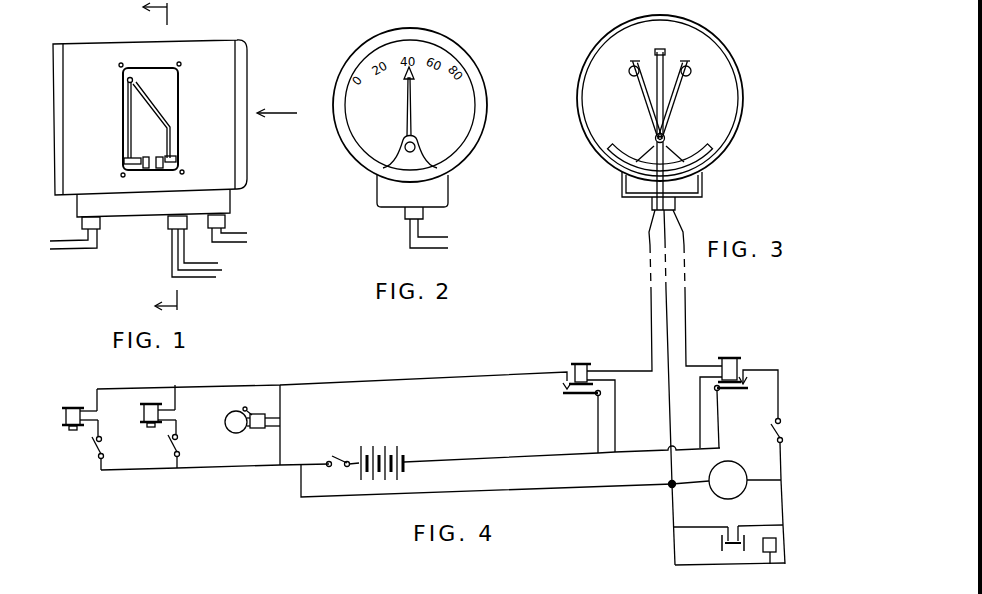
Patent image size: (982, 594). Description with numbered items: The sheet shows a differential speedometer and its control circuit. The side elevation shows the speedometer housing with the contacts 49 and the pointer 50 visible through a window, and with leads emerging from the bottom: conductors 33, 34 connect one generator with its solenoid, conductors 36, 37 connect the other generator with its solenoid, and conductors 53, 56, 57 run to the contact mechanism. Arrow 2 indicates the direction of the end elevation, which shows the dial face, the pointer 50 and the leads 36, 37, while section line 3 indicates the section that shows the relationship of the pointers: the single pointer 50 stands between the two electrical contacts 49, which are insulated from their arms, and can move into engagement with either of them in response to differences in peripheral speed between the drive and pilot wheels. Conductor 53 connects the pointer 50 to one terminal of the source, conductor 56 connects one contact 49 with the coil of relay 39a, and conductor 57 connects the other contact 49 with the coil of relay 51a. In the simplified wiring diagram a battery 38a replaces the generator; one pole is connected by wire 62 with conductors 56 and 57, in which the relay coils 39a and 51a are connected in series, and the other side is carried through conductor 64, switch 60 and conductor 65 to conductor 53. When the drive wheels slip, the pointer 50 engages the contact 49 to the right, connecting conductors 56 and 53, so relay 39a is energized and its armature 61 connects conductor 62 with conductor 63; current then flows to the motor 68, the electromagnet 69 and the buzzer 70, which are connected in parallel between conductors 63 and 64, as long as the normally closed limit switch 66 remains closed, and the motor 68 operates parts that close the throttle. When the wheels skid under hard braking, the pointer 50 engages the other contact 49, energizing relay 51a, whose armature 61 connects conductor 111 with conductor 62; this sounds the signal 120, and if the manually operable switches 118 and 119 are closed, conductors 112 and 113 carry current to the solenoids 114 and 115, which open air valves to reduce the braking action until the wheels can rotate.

In FIG. 1, the arrow 2 is at (277, 107).
In FIG. 1, the section line 3 is at (168, 159).
In FIG. 1, the conductor 33 is at (66, 231).
In FIG. 1, the conductor 34 is at (70, 249).
In FIG. 1, the conductor 36 is at (235, 244).
In FIG. 2, the conductor 36 is at (442, 226).
In FIG. 1, the conductor 37 is at (241, 223).
In FIG. 2, the conductor 37 is at (438, 243).
In FIG. 4, the battery 38a is at (382, 453).
In FIG. 4, the relay 39a is at (732, 373).
In FIG. 1, the electrical contacts 49 is at (133, 80).
In FIG. 3, the electrical contacts 49 is at (637, 58).
In FIG. 1, the pointer 50 is at (159, 116).
In FIG. 3, the pointer 50 is at (661, 52).
In FIG. 4, the relay 51a is at (575, 367).
In FIG. 1, the conductor 53 is at (210, 253).
In FIG. 3, the conductor 53 is at (667, 227).
In FIG. 4, the conductor 53 is at (669, 387).
In FIG. 1, the conductor 56 is at (201, 246).
In FIG. 3, the conductor 56 is at (686, 296).
In FIG. 4, the conductor 56 is at (700, 402).
In FIG. 1, the conductor 57 is at (196, 262).
In FIG. 3, the conductor 57 is at (646, 245).
In FIG. 4, the conductor 57 is at (617, 410).
In FIG. 4, the switch 60 is at (342, 455).
In FIG. 4, the armature 61 is at (578, 396).
In FIG. 4, the conductor 62 is at (525, 452).
In FIG. 4, the conductor 63 is at (780, 404).
In FIG. 4, the conductor 64 is at (598, 487).
In FIG. 4, the conductor 65 is at (355, 466).
In FIG. 4, the limit switch 66 is at (770, 436).
In FIG. 4, the motor 68 is at (742, 468).
In FIG. 4, the electromagnet 69 is at (723, 546).
In FIG. 4, the bell or buzzer 70 is at (777, 546).
In FIG. 4, the conductor 111 is at (422, 378).
In FIG. 4, the conductor 112 is at (177, 398).
In FIG. 4, the conductor 113 is at (98, 402).
In FIG. 4, the solenoid 114 is at (142, 418).
In FIG. 4, the solenoid 115 is at (73, 413).
In FIG. 4, the manually operable switch 118 is at (177, 444).
In FIG. 4, the manually operable switch 119 is at (104, 445).
In FIG. 4, the buzzer 120 is at (260, 429).